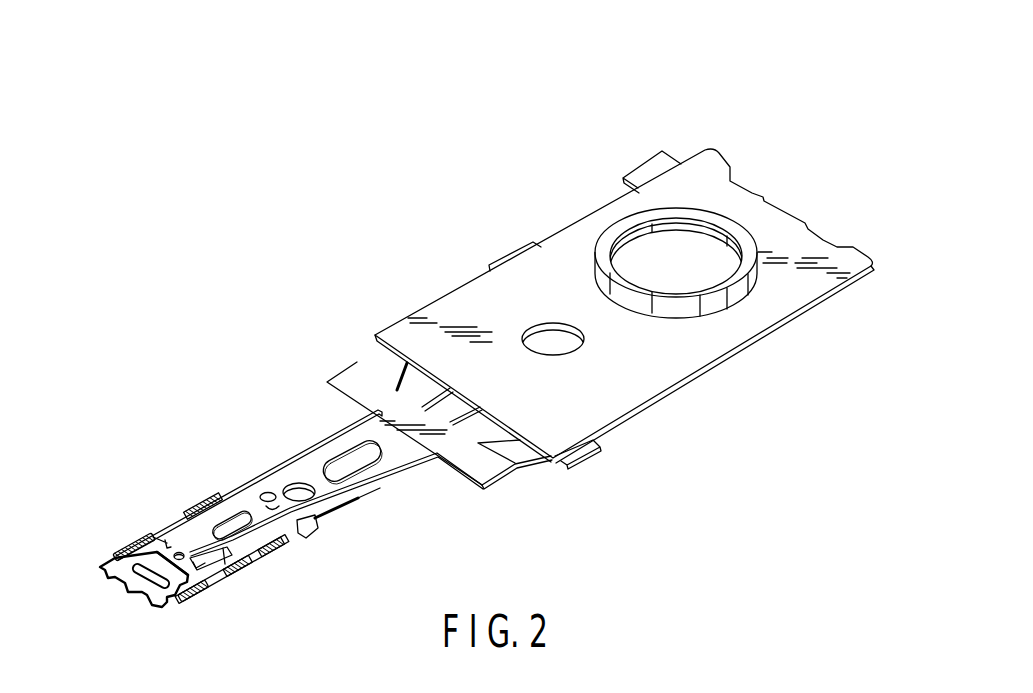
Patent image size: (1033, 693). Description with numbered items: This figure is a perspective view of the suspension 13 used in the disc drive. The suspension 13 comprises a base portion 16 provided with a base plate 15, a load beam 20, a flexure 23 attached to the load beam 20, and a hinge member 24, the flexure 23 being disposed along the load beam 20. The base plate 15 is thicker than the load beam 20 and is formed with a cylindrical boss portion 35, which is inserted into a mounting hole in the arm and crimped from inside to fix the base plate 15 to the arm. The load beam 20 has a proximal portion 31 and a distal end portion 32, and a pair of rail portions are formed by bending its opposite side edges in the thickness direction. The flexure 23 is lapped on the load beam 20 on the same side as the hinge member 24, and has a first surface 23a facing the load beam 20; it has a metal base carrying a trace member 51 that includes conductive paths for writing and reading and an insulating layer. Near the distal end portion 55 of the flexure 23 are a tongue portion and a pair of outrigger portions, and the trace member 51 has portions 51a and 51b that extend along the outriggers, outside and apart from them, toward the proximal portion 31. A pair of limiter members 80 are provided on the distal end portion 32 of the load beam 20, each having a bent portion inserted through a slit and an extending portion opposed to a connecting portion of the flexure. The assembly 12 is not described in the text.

The head suspension assembly 12 is at (147, 498).
The suspension 13 is at (546, 178).
The base plate 15 is at (500, 307).
The base portion 16 is at (792, 334).
The load beam 20 is at (283, 484).
The flexure 23 is at (356, 516).
The first surface 23a is at (300, 523).
The hinge member 24 is at (378, 362).
The proximal portion 31 is at (382, 438).
The distal end portion 32 is at (184, 548).
The boss portion 35 is at (683, 213).
The trace member 51 is at (112, 553).
The portion of trace member 51a is at (199, 499).
The portion of trace member 51b is at (270, 562).
The distal end portion 55 is at (140, 590).
The limiter member 80 is at (133, 547).